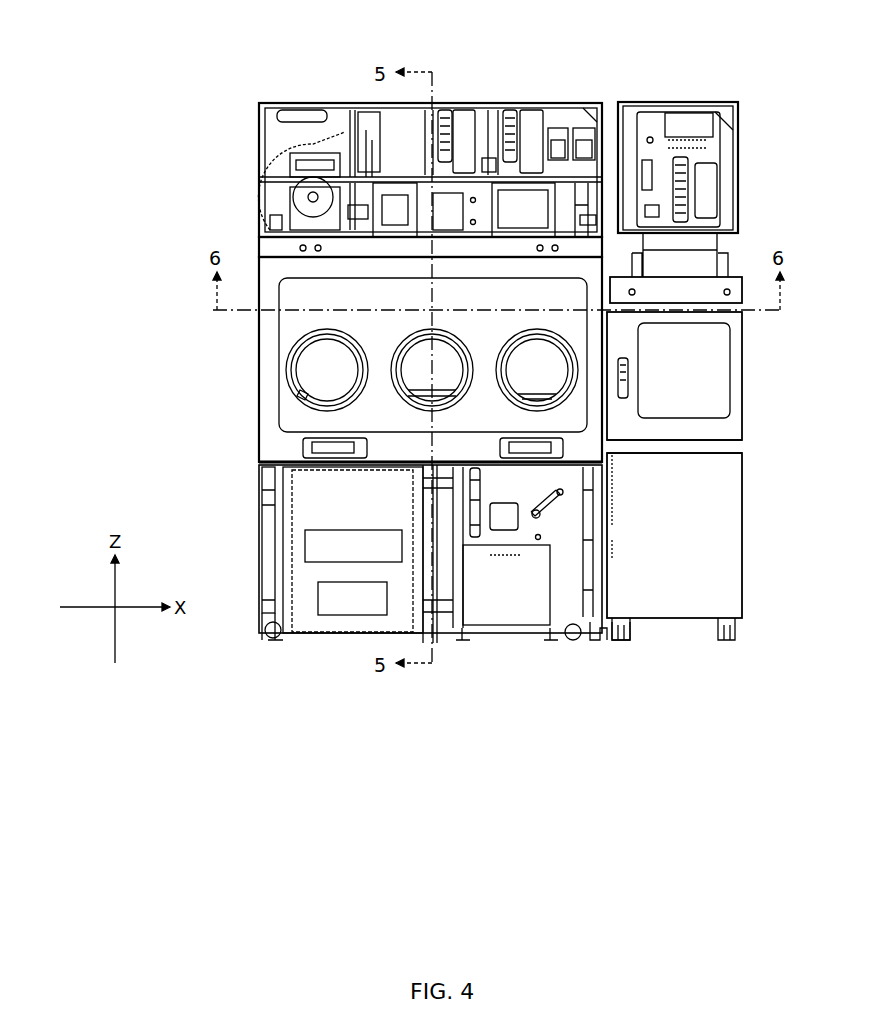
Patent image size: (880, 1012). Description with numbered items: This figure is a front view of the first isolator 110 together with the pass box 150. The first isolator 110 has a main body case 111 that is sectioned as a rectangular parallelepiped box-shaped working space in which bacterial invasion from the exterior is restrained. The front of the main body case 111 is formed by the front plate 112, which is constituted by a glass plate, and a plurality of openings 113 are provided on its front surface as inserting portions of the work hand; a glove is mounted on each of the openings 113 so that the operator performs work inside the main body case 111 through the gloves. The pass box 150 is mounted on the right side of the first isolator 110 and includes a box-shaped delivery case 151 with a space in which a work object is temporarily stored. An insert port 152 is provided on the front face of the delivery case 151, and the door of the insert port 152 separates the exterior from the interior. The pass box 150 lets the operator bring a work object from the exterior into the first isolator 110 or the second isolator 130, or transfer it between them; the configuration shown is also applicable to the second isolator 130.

The first isolator 110 is at (386, 331).
The main body case 111 is at (372, 365).
The front plate 112 is at (277, 445).
The openings 113 is at (348, 348).
The second isolator 130 is at (381, 142).
The pass box 150 is at (708, 329).
The delivery case 151 is at (688, 366).
The insert port 152 is at (680, 427).